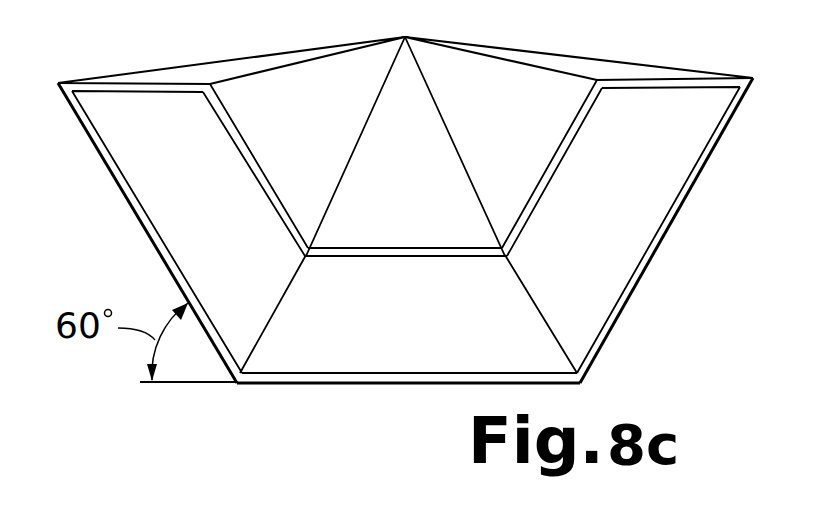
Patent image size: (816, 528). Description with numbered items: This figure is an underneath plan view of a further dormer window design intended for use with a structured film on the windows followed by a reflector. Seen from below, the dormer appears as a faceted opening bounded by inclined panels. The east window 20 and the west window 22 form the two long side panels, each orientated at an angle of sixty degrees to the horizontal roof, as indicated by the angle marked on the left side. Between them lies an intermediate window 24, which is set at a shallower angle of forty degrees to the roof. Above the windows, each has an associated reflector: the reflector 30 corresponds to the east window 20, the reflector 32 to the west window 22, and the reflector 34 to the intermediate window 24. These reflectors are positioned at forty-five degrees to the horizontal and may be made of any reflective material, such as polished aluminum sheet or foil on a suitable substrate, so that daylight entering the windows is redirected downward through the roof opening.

The east window 20 is at (592, 280).
The west window 22 is at (170, 205).
The intermediate window 24 is at (387, 333).
The reflector 30 is at (483, 142).
The reflector 32 is at (279, 140).
The reflector 34 is at (415, 191).